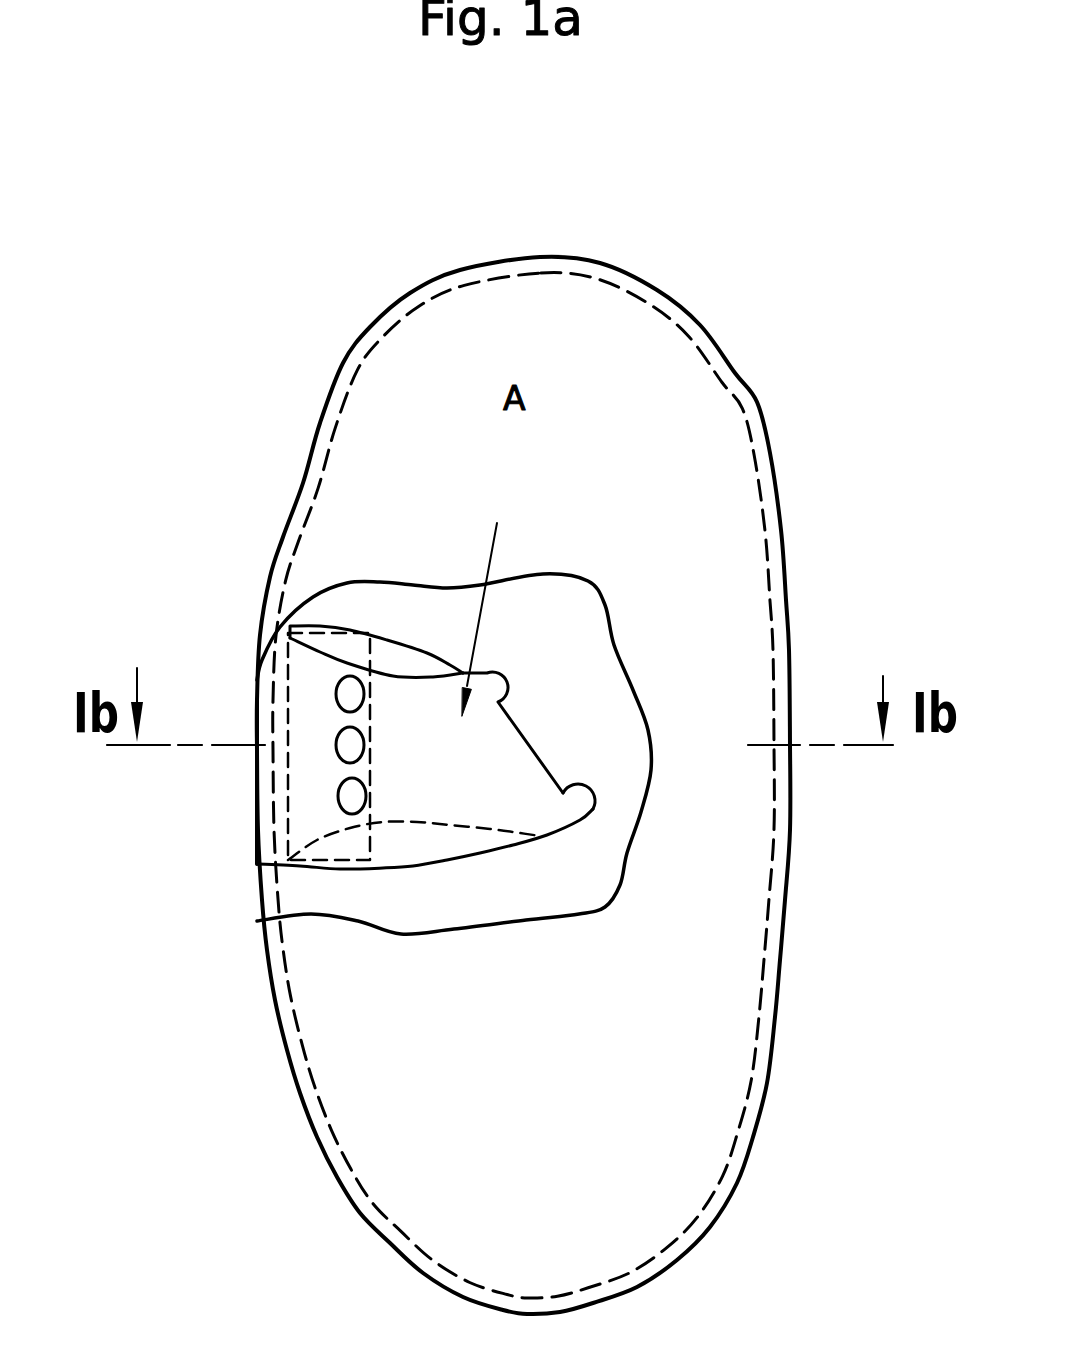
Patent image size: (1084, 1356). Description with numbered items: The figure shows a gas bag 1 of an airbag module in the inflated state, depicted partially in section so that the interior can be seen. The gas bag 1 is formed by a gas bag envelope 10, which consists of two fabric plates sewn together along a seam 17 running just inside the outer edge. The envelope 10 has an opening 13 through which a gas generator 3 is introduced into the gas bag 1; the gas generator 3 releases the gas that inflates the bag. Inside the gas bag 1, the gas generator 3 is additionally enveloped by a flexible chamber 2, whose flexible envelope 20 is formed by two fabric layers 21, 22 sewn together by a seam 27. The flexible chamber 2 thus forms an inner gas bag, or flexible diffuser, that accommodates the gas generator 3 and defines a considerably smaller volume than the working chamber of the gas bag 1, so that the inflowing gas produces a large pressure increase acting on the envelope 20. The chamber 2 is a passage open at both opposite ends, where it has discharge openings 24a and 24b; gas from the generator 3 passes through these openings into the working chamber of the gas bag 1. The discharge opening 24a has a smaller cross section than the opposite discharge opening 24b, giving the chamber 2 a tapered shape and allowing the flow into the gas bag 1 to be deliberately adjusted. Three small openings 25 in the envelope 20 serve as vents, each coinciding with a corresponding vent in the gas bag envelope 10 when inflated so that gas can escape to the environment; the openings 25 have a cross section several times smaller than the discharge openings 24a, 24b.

The gas bag 1 is at (792, 300).
The gas bag envelope 10 is at (752, 402).
The seam 17 is at (750, 517).
The flexible chamber 2 is at (568, 663).
The gas generator 3 is at (289, 694).
The opening 13 is at (252, 782).
The flexible envelope 20 is at (497, 597).
The fabric layer 21 is at (428, 650).
The fabric layer 22 is at (482, 787).
The discharge opening 24a is at (407, 657).
The discharge opening 24b is at (453, 830).
The vent opening 25 is at (348, 694).
The seam 27 is at (599, 811).